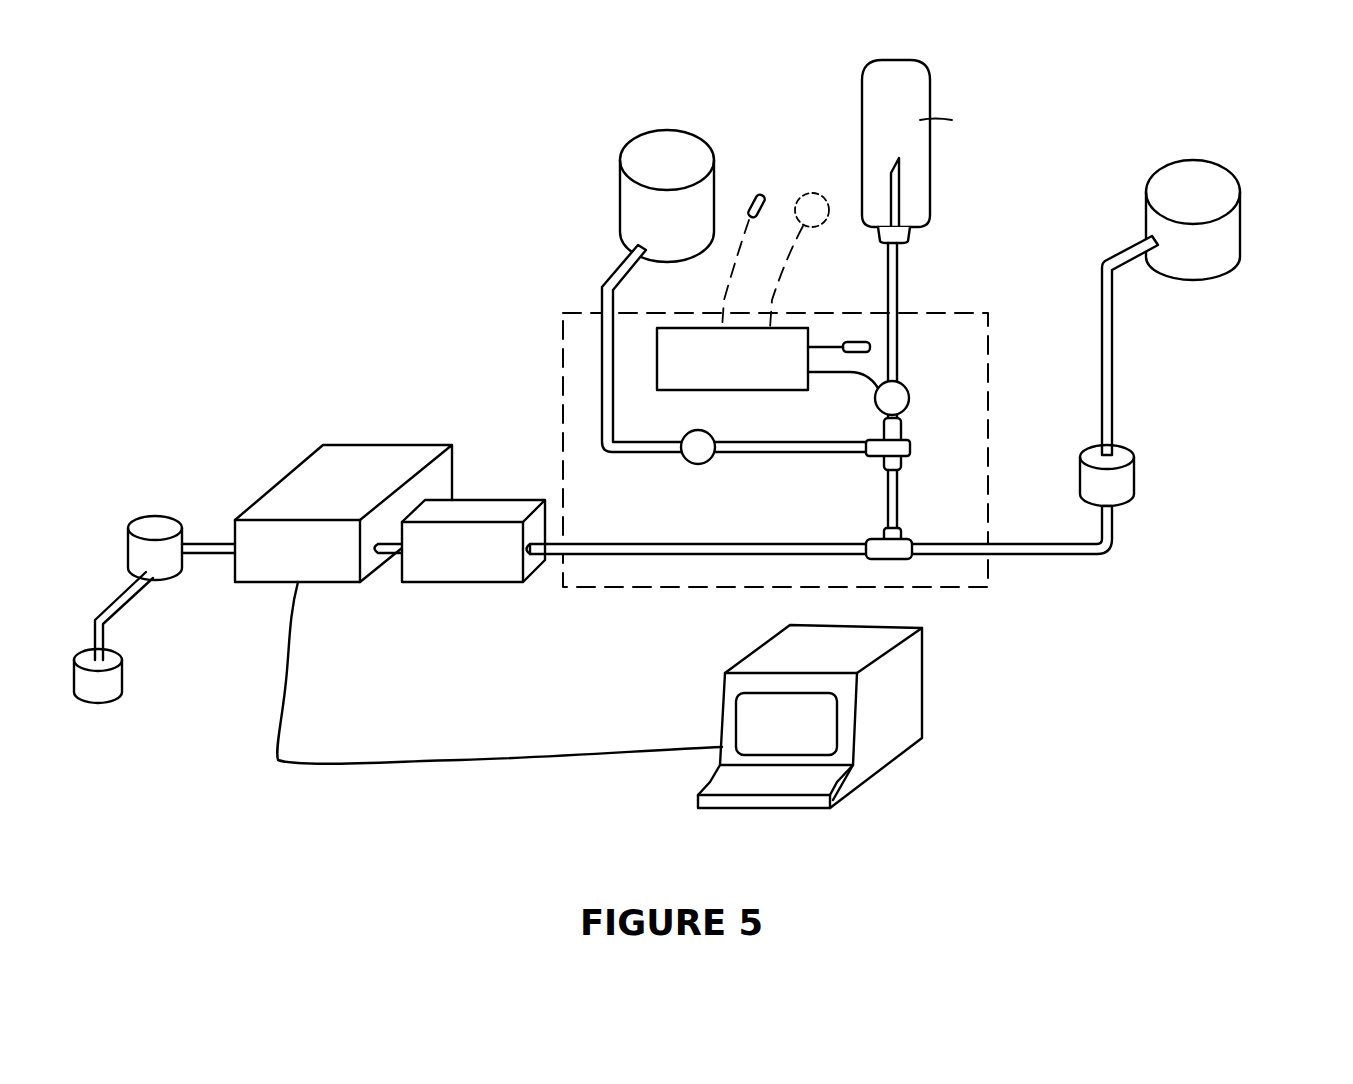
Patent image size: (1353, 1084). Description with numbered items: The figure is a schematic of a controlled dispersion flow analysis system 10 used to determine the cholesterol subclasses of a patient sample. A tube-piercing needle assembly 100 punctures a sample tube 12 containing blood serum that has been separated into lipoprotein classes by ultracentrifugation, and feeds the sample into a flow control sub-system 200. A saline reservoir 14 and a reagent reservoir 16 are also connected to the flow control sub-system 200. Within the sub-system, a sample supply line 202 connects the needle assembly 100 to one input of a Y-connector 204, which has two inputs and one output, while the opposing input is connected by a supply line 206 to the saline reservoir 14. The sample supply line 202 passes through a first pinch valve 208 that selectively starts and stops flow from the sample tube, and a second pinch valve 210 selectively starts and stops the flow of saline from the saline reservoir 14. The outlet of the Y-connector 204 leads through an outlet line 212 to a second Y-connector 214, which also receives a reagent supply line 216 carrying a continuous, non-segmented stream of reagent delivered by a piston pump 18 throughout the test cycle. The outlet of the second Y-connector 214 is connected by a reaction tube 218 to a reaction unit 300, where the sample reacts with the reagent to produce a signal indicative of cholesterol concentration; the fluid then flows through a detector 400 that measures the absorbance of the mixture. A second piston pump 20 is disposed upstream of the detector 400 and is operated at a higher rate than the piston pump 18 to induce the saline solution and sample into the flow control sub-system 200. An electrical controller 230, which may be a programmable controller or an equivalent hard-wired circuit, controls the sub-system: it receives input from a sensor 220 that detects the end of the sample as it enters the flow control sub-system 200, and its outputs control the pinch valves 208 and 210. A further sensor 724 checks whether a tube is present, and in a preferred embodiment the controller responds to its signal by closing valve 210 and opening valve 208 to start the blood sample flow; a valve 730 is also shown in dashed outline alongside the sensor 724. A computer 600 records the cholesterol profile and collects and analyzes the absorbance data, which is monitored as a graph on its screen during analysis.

The controlled dispersion flow analysis system 10 is at (448, 205).
The sample tube 12 is at (862, 103).
The saline reservoir 14 is at (622, 190).
The reagent reservoir 16 is at (1232, 236).
The piston pump 18 is at (1137, 465).
The second piston pump 20 is at (157, 518).
The tube-piercing needle assembly 100 is at (918, 235).
The flow control sub-system 200 is at (560, 368).
The sample supply line 202 is at (900, 289).
The Y-connector 204 is at (903, 450).
The supply line 206 is at (755, 455).
The first pinch valve 208 is at (910, 397).
The second pinch valve 210 is at (688, 466).
The outlet line 212 is at (897, 513).
The second Y-connector 214 is at (897, 560).
The reagent supply line 216 is at (1115, 367).
The reaction tube 218 is at (648, 553).
The sensor 220 is at (857, 336).
The electrical controller 230 is at (730, 380).
The reaction unit 300 is at (465, 577).
The detector 400 is at (293, 483).
The computer 600 is at (913, 700).
The sensor 724 is at (763, 188).
The valve 730 is at (808, 193).